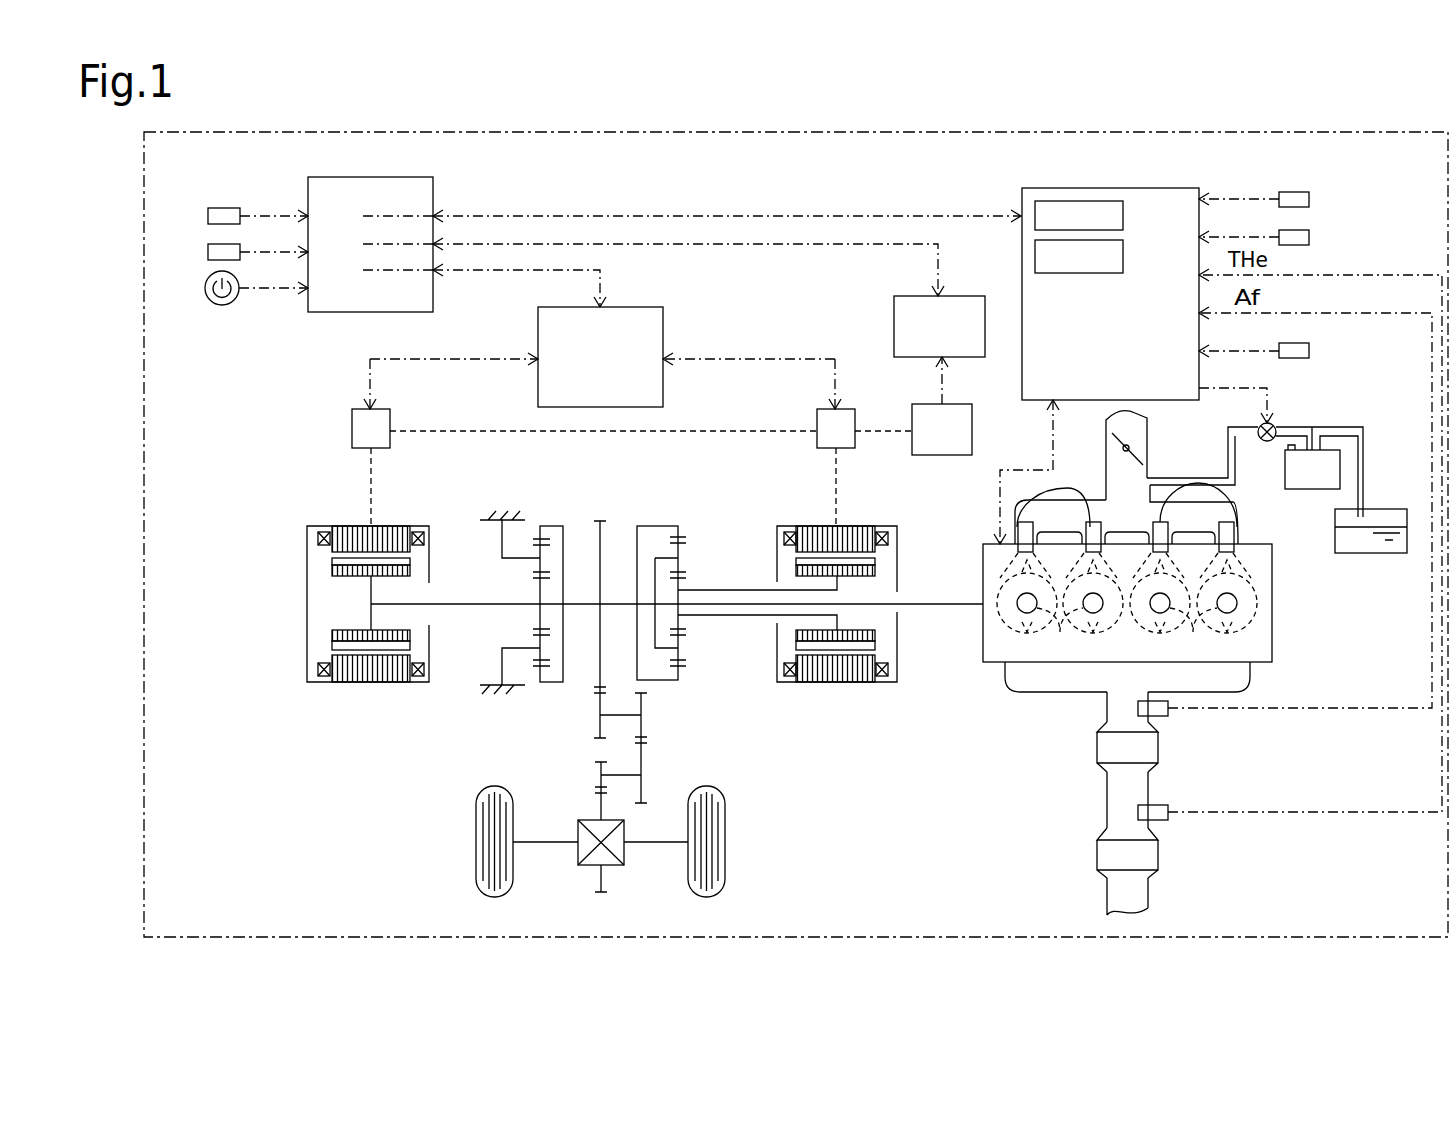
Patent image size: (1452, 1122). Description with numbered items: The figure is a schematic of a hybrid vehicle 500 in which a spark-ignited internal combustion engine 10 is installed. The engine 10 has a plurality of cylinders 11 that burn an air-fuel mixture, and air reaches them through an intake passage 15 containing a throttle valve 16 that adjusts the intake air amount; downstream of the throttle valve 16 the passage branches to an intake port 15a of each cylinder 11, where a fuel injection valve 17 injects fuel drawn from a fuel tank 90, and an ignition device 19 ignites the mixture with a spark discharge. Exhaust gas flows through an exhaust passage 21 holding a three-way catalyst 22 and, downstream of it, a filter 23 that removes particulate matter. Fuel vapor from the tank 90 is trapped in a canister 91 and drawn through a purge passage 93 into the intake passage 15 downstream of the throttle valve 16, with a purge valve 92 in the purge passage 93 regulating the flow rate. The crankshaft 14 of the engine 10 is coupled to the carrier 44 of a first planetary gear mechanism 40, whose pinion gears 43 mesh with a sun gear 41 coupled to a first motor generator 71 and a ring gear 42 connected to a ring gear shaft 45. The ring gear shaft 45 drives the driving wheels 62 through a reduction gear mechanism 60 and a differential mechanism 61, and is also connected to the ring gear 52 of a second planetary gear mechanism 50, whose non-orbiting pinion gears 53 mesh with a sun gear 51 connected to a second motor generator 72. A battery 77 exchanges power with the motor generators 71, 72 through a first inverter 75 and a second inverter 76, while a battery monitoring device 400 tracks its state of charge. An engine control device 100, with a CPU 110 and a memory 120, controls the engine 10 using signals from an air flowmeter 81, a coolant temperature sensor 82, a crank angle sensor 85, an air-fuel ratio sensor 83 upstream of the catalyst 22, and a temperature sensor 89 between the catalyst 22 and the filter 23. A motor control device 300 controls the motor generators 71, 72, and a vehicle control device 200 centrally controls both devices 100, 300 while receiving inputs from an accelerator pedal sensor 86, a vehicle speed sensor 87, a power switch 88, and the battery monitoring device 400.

The hybrid vehicle 500 is at (776, 131).
The vehicle control device 200 is at (350, 177).
The accelerator pedal sensor 86 is at (208, 213).
The vehicle speed sensor 87 is at (208, 249).
The power switch 88 is at (205, 285).
The motor control device 300 is at (538, 328).
The battery monitoring device 400 is at (894, 328).
The second inverter 76 is at (352, 440).
The first inverter 75 is at (817, 446).
The battery 77 is at (972, 432).
The engine control device 100 is at (1132, 188).
The CPU 110 is at (1123, 215).
The memory 120 is at (1123, 257).
The air flowmeter 81 is at (1309, 199).
The coolant temperature sensor 82 is at (1309, 237).
The crank angle sensor 85 is at (1309, 351).
The purge valve 92 is at (1273, 423).
The purge passage 93 is at (1230, 448).
The canister 91 is at (1312, 489).
The fuel tank 90 is at (1407, 537).
The intake passage 15 is at (1106, 446).
The throttle valve 16 is at (1147, 447).
The fuel injection valve 17 is at (1067, 492).
The intake port 15a is at (1080, 582).
The internal combustion engine 10 is at (1272, 588).
The cylinder 11 is at (1230, 665).
The ignition device 19 is at (1127, 634).
The exhaust passage 21 is at (1107, 796).
The three-way catalyst 22 is at (1097, 747).
The filter 23 is at (1097, 856).
The air-fuel ratio sensor 83 is at (1160, 716).
The temperature sensor 89 is at (1160, 820).
The crankshaft 14 is at (952, 602).
The second motor generator 72 is at (307, 614).
The first motor generator 71 is at (890, 526).
The second planetary gear mechanism 50 is at (481, 494).
The sun gear 51 is at (537, 590).
The ring gear 52 is at (538, 538).
The pinion gear 53 is at (536, 660).
The ring gear shaft 45 is at (620, 600).
The first planetary gear mechanism 40 is at (681, 497).
The sun gear 41 is at (683, 584).
The ring gear 42 is at (683, 536).
The pinion gear 43 is at (683, 640).
The carrier 44 is at (672, 672).
The reduction gear mechanism 60 is at (676, 757).
The differential mechanism 61 is at (590, 866).
The driving wheels 62 is at (476, 855).